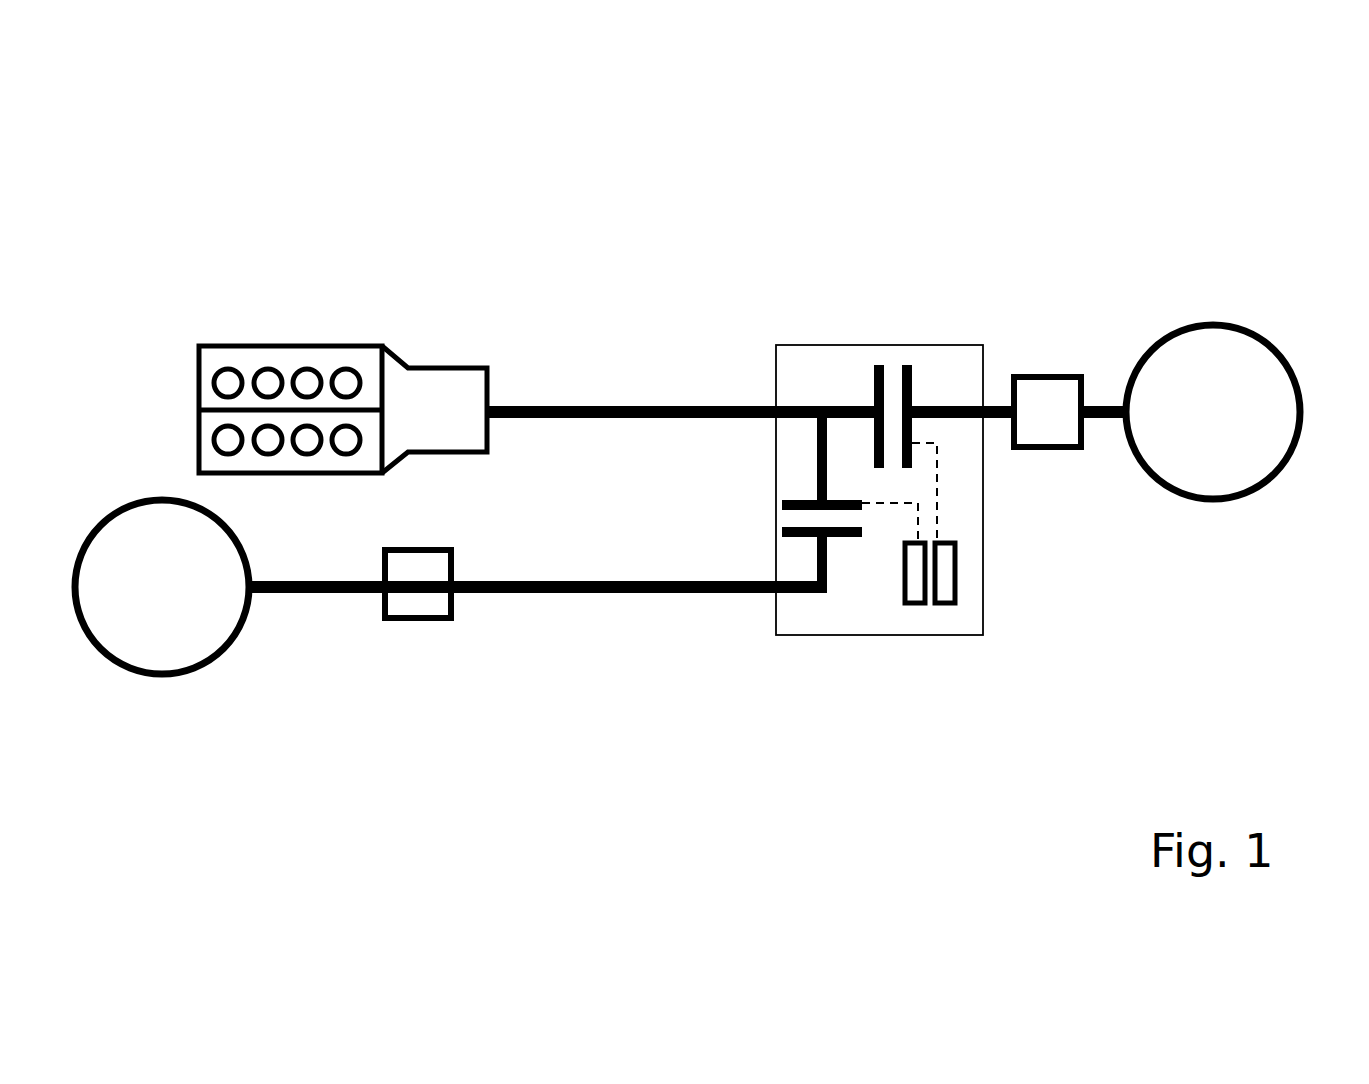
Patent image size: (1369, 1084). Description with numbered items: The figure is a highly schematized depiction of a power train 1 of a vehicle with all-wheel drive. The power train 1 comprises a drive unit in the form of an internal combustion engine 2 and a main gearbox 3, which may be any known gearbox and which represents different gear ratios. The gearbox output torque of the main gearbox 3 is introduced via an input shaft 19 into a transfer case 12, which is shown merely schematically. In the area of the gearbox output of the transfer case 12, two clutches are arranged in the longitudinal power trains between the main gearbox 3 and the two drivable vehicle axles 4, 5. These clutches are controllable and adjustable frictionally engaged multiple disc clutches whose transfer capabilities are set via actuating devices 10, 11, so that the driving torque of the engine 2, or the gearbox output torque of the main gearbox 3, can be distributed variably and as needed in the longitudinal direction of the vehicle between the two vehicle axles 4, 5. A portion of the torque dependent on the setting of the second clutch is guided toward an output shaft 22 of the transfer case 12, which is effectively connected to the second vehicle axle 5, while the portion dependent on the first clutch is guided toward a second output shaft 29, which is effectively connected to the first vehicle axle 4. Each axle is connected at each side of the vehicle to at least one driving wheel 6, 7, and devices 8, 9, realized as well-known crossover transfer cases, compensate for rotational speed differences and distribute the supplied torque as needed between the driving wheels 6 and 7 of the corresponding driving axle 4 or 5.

The power train 1 is at (157, 252).
The internal combustion engine 2 is at (285, 363).
The main gearbox 3 is at (438, 380).
The vehicle axle 4 is at (175, 676).
The vehicle axle 5 is at (1216, 503).
The driving wheel 6 is at (108, 543).
The driving wheel 7 is at (1220, 378).
The device for compensating rotational speed differences 8 is at (420, 593).
The device for compensating rotational speed differences 9 is at (1022, 375).
The actuating device 10 is at (953, 600).
The actuating device 11 is at (913, 605).
The transfer case 12 is at (768, 384).
The input shaft 19 is at (571, 405).
The output shaft 22 is at (828, 570).
The second output shaft 29 is at (937, 405).